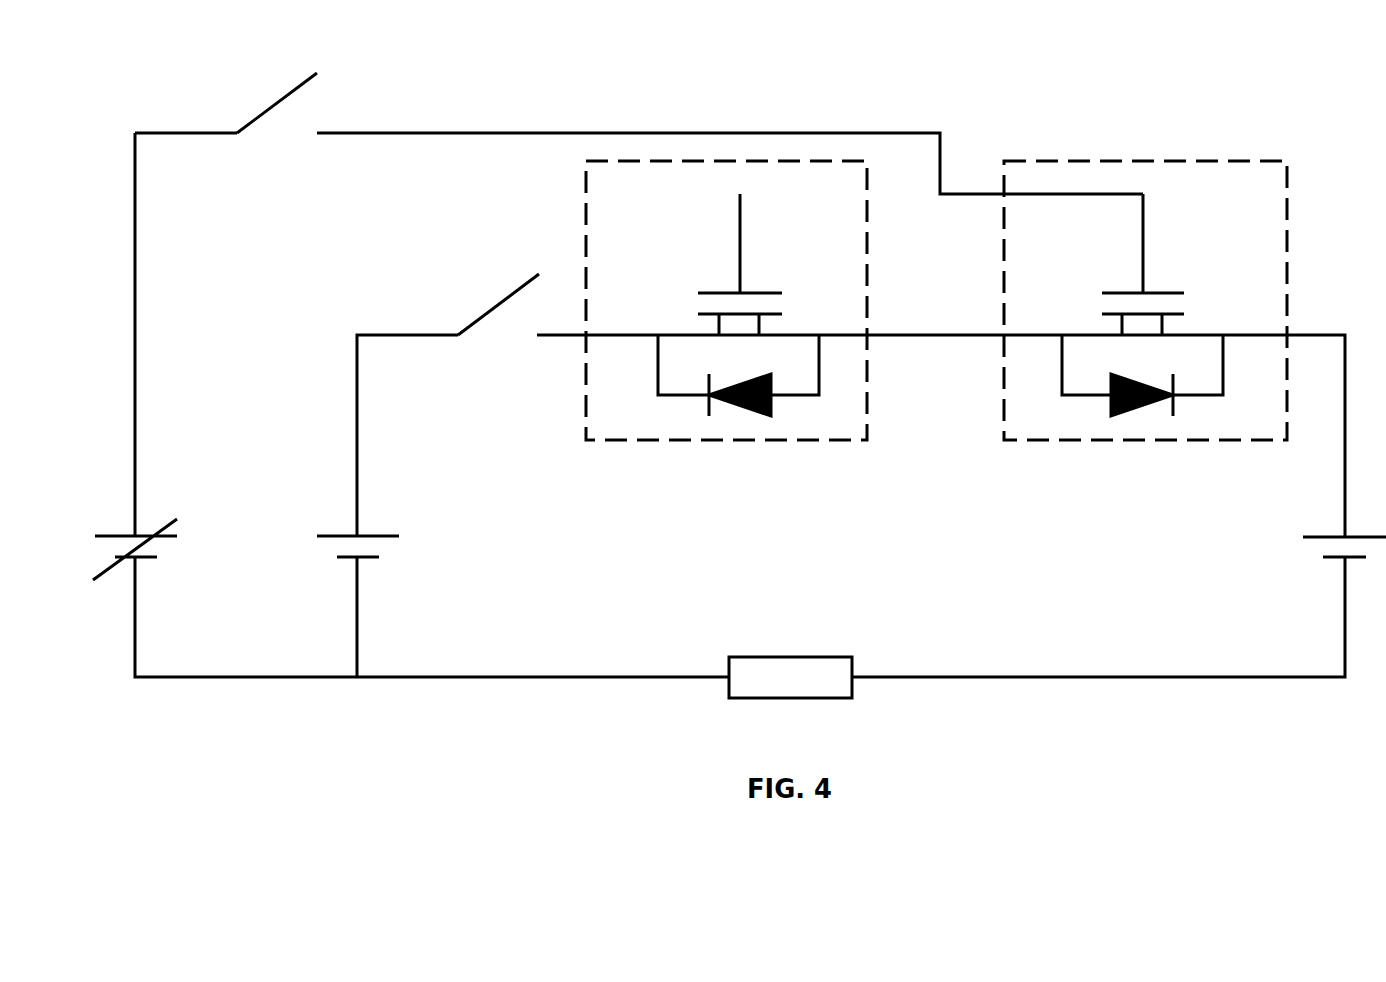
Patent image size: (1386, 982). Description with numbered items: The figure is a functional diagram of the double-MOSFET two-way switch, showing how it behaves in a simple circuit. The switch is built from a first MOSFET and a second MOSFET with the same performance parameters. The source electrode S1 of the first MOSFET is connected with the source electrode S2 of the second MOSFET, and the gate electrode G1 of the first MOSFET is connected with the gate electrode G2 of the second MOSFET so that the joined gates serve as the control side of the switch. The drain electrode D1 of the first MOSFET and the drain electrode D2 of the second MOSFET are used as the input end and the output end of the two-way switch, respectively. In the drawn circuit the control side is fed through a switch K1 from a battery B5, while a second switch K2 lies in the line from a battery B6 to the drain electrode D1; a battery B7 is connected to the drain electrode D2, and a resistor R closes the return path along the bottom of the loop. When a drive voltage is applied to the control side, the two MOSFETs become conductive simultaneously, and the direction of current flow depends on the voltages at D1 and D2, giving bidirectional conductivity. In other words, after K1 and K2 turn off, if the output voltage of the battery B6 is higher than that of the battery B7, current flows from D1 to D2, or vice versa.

The switch K1 is at (277, 130).
The switch K2 is at (498, 332).
The gate electrode of the first MOSFET G1 is at (729, 255).
The drain electrode of the first MOSFET D1 is at (676, 317).
The source electrode of the first MOSFET S1 is at (790, 317).
The gate electrode of the second MOSFET G2 is at (1132, 255).
The source electrode of the second MOSFET S2 is at (1078, 317).
The drain electrode of the second MOSFET D2 is at (1198, 317).
The battery B5 is at (162, 552).
The battery B6 is at (386, 561).
The battery B7 is at (1325, 565).
The resistor R is at (790, 654).